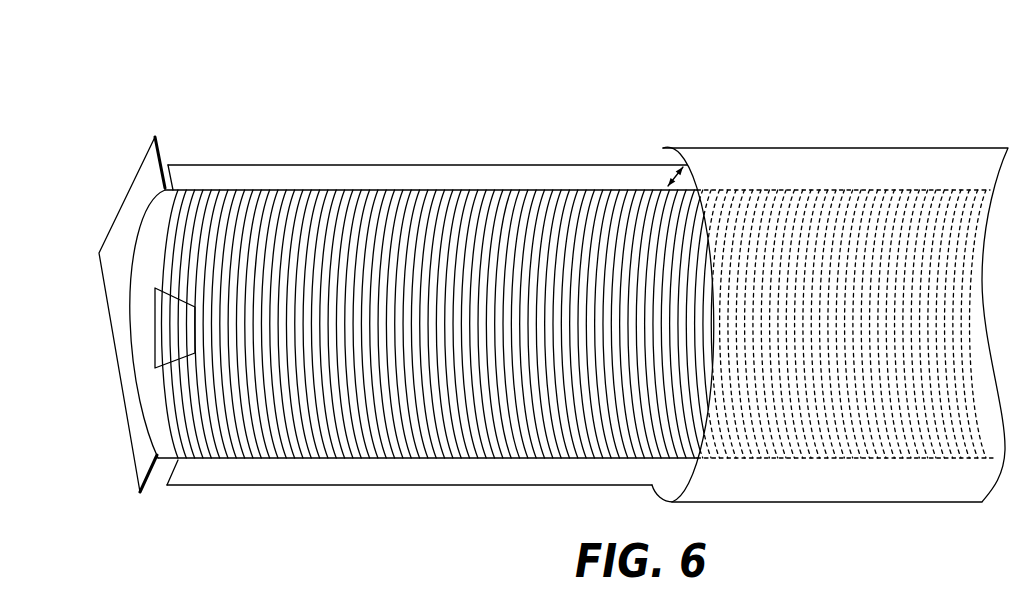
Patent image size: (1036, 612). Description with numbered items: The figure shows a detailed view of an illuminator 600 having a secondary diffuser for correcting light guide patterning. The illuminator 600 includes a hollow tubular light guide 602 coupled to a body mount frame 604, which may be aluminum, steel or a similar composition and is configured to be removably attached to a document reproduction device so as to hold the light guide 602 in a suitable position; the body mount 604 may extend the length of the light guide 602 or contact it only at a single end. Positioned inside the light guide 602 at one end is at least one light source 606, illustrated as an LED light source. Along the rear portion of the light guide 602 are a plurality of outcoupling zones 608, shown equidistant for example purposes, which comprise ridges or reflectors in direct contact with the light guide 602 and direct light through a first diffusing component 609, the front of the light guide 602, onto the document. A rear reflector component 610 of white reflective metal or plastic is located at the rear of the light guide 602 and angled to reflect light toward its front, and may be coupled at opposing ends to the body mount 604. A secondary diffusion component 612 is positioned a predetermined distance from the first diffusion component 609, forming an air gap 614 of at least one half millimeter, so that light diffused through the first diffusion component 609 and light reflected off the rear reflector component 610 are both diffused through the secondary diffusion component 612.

The illuminator 600 is at (670, 66).
The hollow tubular light guide 602 is at (168, 165).
The body mount frame 604 is at (126, 200).
The light source 606 is at (155, 327).
The outcoupling zones 608 is at (508, 190).
The first diffusing component 609 is at (178, 461).
The rear reflector component 610 is at (252, 164).
The secondary diffusion component 612 is at (878, 148).
The air gap 614 is at (668, 162).